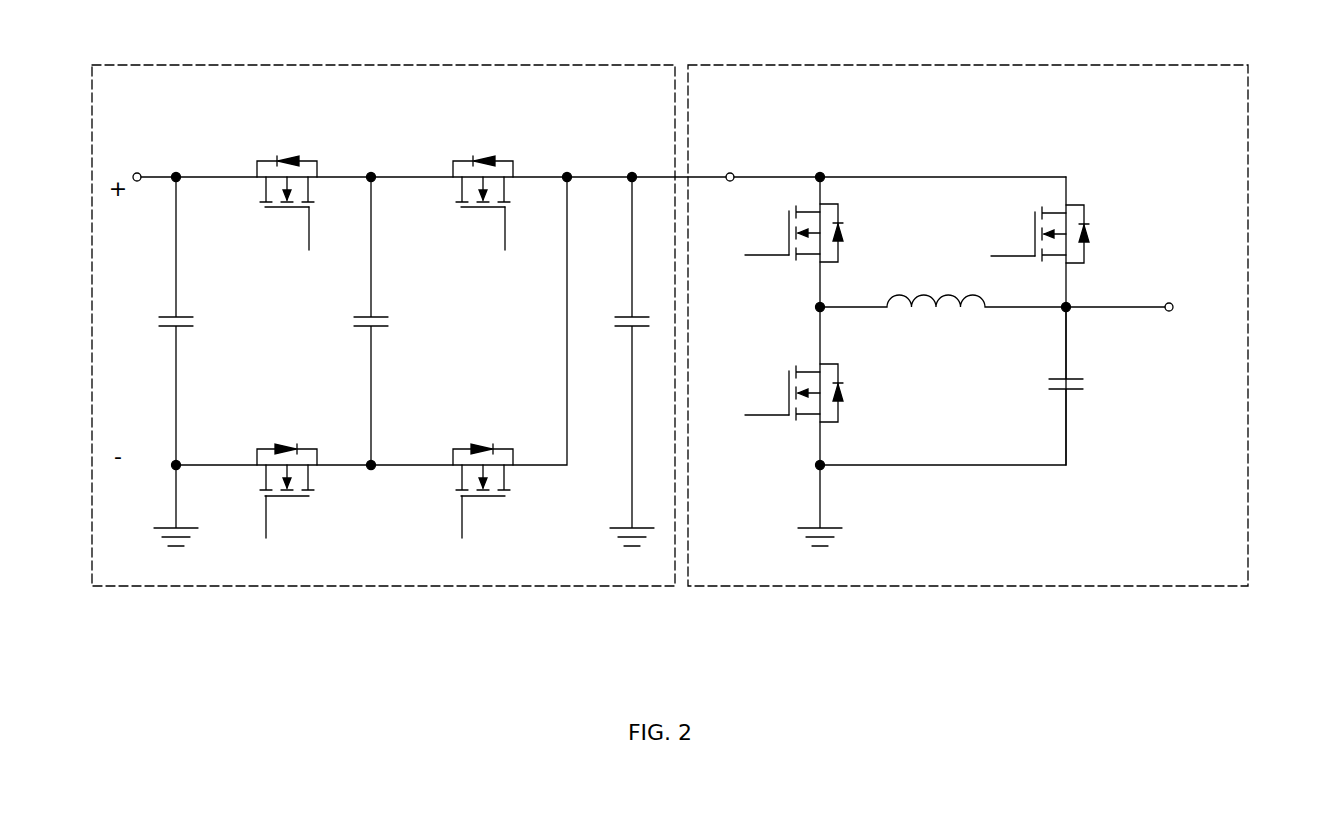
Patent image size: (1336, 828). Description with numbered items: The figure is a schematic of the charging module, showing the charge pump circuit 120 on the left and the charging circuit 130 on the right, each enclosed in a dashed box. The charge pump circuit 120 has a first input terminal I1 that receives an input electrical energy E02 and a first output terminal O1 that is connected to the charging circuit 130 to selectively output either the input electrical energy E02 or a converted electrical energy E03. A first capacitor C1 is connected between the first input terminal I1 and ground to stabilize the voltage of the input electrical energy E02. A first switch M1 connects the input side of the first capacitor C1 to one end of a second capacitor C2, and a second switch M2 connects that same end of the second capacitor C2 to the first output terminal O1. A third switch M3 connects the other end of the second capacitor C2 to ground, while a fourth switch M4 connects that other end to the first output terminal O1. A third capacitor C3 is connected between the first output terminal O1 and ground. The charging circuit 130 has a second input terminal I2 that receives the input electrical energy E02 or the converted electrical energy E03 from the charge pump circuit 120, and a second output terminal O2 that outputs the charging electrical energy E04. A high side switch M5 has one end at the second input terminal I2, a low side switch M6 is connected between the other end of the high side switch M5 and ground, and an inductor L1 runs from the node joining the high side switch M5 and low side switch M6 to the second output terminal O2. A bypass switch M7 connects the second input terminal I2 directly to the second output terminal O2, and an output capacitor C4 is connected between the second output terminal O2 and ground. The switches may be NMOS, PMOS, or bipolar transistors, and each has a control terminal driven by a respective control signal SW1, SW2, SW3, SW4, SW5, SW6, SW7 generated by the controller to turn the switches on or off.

The charge pump circuit 120 is at (363, 65).
The charging circuit 130 is at (907, 65).
The first input terminal I1 is at (137, 159).
The first output terminal O1 is at (632, 172).
The second input terminal I2 is at (730, 173).
The second output terminal O2 is at (1170, 303).
The input electrical energy E02 is at (152, 429).
The converted electrical energy E03 is at (682, 144).
The charging electrical energy E04 is at (1147, 308).
The first switch M1 is at (287, 165).
The second switch M2 is at (483, 165).
The third switch M3 is at (287, 453).
The fourth switch M4 is at (483, 453).
The high side switch M5 is at (841, 233).
The low side switch M6 is at (841, 393).
The bypass switch M7 is at (1087, 234).
The control signal SW1 is at (287, 246).
The control signal SW2 is at (483, 246).
The control signal SW3 is at (287, 534).
The control signal SW4 is at (483, 534).
The control signal SW5 is at (753, 239).
The control signal SW6 is at (753, 399).
The control signal SW7 is at (999, 239).
The first capacitor C1 is at (195, 321).
The second capacitor C2 is at (391, 321).
The third capacitor C3 is at (616, 361).
The output capacitor C4 is at (1086, 386).
The inductor L1 is at (943, 318).